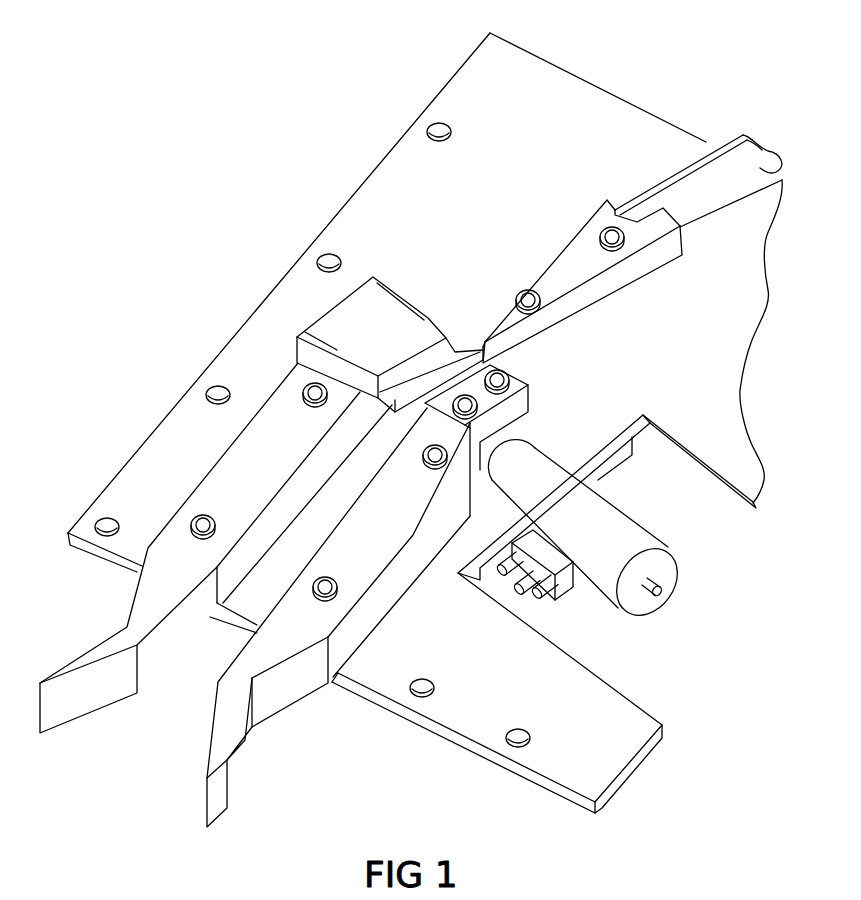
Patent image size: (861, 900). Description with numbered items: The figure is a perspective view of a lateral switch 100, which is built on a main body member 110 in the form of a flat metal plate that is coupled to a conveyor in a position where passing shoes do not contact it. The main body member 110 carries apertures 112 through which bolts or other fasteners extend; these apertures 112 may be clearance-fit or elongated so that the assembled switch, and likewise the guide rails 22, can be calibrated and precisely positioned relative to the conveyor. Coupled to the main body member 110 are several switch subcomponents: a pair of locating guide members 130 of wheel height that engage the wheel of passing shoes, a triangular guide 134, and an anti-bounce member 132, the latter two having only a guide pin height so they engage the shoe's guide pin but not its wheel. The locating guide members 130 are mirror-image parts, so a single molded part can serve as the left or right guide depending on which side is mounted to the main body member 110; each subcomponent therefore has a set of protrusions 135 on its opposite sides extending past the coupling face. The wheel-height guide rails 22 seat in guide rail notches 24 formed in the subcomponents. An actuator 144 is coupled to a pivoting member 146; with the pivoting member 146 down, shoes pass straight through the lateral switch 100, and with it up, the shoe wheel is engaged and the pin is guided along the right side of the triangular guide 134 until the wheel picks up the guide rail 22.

The lateral switch 100 is at (627, 83).
The main body member 110 is at (483, 78).
The apertures 112 is at (439, 123).
The guide rails 22 is at (760, 168).
The guide rail notches 24 is at (683, 231).
The triangular guide 134 is at (606, 292).
The protrusions 135 is at (529, 313).
The anti-bounce member 132 is at (517, 420).
The locating guide members 130 is at (145, 594).
The actuator 144 is at (643, 532).
The pivoting member 146 is at (334, 323).